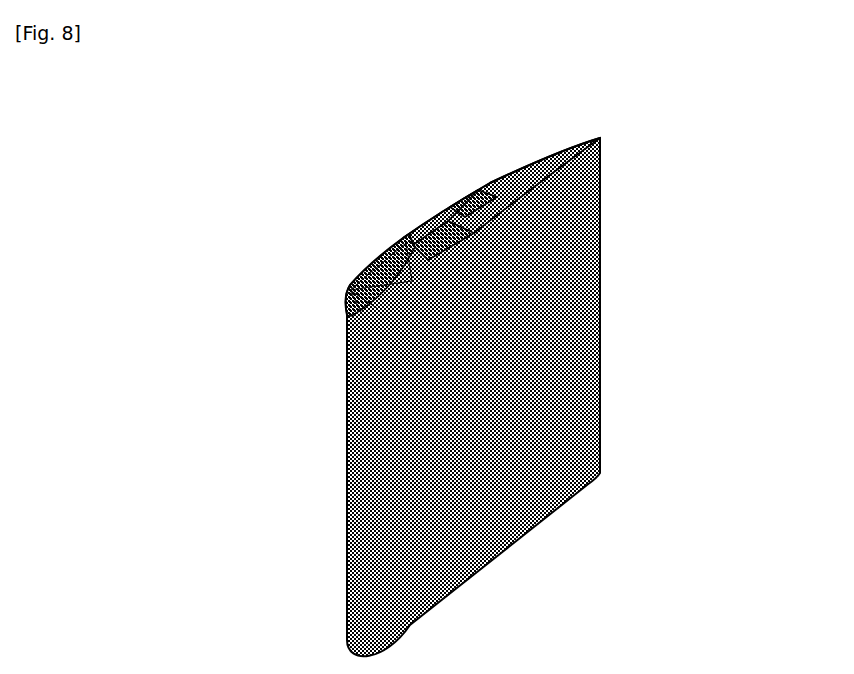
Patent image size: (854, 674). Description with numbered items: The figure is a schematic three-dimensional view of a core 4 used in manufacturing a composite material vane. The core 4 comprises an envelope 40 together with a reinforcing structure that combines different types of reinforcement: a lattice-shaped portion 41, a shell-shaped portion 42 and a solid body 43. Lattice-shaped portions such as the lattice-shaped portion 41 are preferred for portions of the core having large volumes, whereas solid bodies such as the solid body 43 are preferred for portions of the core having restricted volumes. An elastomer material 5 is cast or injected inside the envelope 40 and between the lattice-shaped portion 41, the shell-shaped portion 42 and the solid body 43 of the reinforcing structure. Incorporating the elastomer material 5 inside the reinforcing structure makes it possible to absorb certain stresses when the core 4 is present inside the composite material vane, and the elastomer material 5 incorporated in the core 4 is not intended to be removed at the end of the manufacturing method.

The core 4 is at (600, 412).
The envelope 40 is at (600, 250).
The lattice-shaped portion 41 is at (346, 312).
The shell-shaped portion 42 is at (430, 216).
The solid body 43 is at (533, 160).
The elastomer material 5 is at (484, 186).